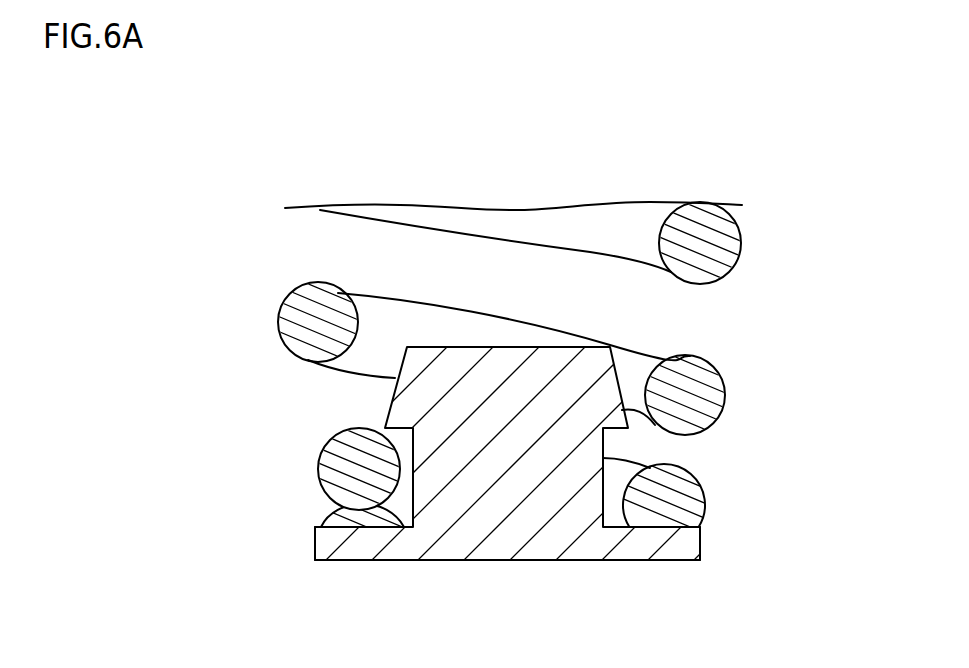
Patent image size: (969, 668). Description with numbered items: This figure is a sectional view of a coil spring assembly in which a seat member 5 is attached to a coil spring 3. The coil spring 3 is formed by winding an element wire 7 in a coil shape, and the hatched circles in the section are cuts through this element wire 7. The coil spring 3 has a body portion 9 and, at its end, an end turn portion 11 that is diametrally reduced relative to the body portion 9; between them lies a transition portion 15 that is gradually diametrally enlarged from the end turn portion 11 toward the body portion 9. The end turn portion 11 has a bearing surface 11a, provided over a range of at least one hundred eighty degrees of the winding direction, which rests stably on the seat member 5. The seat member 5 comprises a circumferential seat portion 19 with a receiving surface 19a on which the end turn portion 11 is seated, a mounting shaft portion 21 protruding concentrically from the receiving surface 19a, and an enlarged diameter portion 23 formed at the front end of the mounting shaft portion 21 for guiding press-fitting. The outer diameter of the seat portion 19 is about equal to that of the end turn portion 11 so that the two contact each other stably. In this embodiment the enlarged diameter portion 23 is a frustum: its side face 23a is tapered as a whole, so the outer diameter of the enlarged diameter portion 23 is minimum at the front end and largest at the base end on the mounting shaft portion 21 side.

The coil spring 3 is at (697, 201).
The seat member 5 is at (417, 534).
The element wire 7 is at (677, 223).
The body portion 9 is at (502, 223).
The end turn portion 11 is at (707, 504).
The bearing surface 11a is at (345, 530).
The transition portion 15 is at (710, 361).
The seat portion 19 is at (673, 550).
The receiving surface 19a is at (320, 523).
The mounting shaft portion 21 is at (572, 482).
The enlarged diameter portion 23 is at (593, 345).
The side face 23a is at (397, 392).